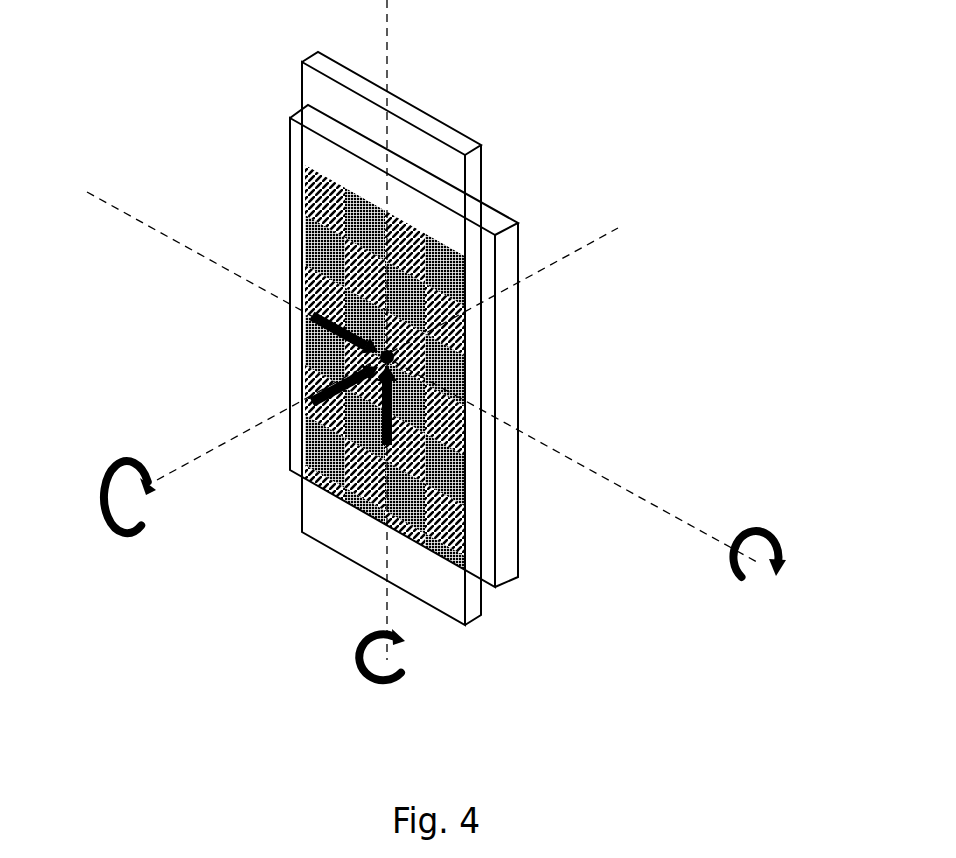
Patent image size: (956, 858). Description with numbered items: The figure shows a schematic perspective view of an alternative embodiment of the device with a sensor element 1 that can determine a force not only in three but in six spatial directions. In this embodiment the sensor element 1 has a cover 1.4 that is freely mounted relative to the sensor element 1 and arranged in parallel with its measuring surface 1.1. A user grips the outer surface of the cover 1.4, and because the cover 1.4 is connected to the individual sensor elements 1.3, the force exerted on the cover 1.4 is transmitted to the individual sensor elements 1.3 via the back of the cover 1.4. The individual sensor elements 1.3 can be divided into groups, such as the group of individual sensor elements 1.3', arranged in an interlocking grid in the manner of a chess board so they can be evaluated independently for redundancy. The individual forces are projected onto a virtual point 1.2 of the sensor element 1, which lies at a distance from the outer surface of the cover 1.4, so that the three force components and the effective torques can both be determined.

The sensor element 1 is at (290, 116).
The measuring surface 1.1 is at (289, 174).
The virtual point 1.2 is at (394, 355).
The individual sensor element 1.3 is at (305, 358).
The group of individual sensor elements 1.3' is at (303, 422).
The cover 1.4 is at (302, 532).